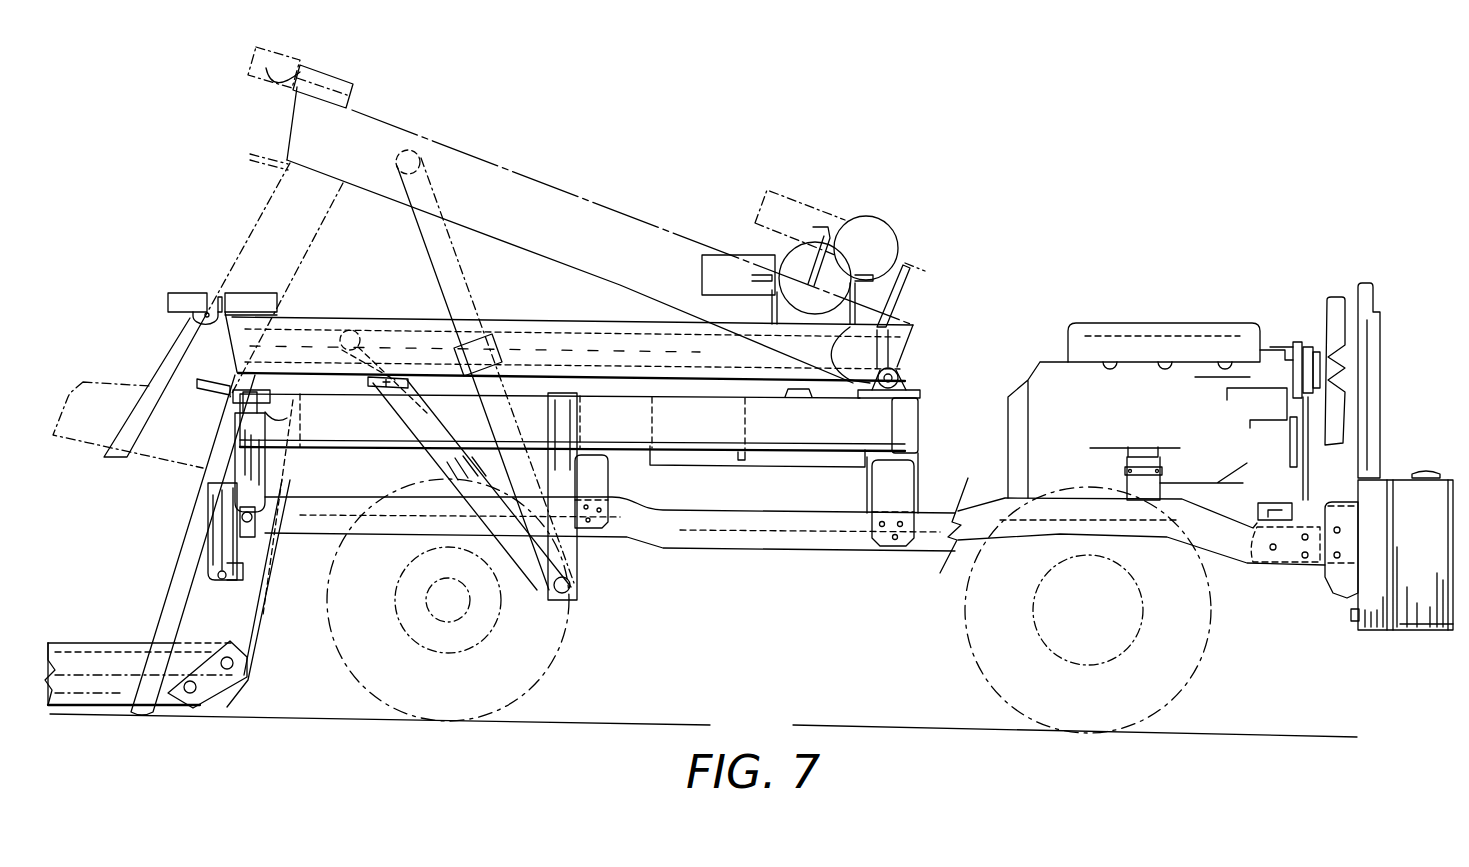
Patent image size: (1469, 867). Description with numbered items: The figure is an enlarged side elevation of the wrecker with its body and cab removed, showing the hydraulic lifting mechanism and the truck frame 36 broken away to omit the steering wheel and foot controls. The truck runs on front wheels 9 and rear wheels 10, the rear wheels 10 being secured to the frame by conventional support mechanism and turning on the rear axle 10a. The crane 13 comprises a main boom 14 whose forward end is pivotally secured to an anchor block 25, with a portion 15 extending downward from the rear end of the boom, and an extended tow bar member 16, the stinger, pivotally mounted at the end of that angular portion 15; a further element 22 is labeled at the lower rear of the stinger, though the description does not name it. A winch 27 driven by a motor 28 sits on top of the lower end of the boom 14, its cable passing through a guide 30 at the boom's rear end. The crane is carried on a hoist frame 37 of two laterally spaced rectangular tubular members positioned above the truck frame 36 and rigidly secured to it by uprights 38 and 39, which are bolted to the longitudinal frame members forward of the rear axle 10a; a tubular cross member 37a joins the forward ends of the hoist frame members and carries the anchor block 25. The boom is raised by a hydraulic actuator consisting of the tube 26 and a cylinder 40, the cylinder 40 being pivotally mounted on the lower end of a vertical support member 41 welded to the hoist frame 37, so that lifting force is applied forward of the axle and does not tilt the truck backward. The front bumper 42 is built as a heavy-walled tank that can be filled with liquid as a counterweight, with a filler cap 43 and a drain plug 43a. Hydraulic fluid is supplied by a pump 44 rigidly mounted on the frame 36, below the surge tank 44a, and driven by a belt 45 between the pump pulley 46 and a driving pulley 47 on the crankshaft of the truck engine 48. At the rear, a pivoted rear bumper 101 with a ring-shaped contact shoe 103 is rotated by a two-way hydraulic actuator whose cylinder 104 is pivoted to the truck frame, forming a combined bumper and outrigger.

The front wheels 9 is at (1190, 698).
The rear wheels 10 is at (548, 690).
The rear axle 10a is at (425, 603).
The crane 13 is at (385, 307).
The main boom 14 is at (597, 319).
The downward boom portion 15 is at (177, 563).
The tow bar member 16 is at (137, 630).
The chute extension 22 is at (48, 643).
The anchor block 25 is at (903, 384).
The hydraulically actuated tube 26 is at (398, 380).
The winch 27 is at (887, 222).
The motor 28 is at (805, 200).
The guide 30 is at (170, 292).
The truck frame 36 is at (797, 552).
The hoist frame 37 is at (342, 448).
The cross member 37a is at (922, 418).
The upright 38 is at (608, 483).
The upright 39 is at (924, 468).
The cylinder 40 is at (527, 578).
The vertical support member 41 is at (580, 546).
The front bumper 42 is at (1418, 632).
The filler cap 43 is at (1422, 474).
The drain plug 43a is at (1350, 620).
The pump 44 is at (1257, 505).
The surge tank 44a is at (804, 462).
The belt 45 is at (1310, 485).
The pump pulley 46 is at (1298, 500).
The driving pulley 47 is at (1318, 445).
The truck engine 48 is at (1182, 416).
The rear bumper 101 is at (207, 512).
The contact shoe 103 is at (246, 584).
The cylinder 104 is at (228, 465).